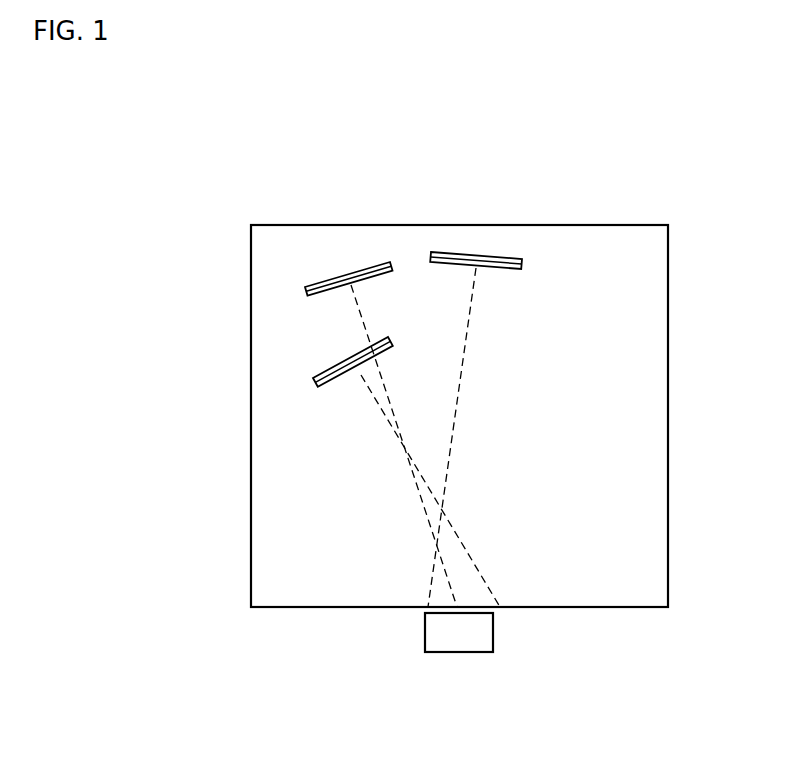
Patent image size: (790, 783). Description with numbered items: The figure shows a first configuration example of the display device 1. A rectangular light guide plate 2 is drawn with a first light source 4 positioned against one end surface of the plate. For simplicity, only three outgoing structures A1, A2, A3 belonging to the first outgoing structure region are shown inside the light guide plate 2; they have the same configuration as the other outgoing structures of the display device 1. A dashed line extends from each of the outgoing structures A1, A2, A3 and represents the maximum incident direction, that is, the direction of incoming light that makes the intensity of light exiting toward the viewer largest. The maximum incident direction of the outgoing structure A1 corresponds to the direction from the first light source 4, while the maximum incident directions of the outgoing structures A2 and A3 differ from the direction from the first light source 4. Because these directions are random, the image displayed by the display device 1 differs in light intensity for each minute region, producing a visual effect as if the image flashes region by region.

The display device 1 is at (217, 175).
The light guide plate 2 is at (668, 335).
The outgoing structure A1 is at (340, 276).
The outgoing structure A2 is at (467, 254).
The outgoing structure A3 is at (342, 362).
The first light source 4 is at (458, 653).